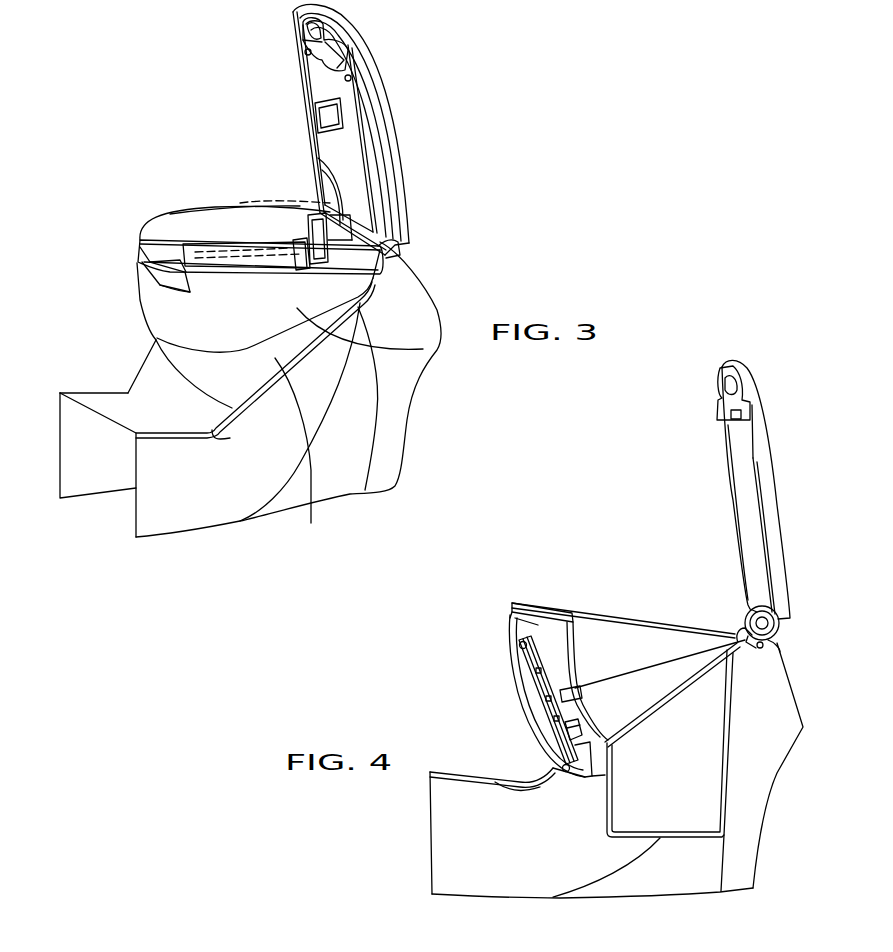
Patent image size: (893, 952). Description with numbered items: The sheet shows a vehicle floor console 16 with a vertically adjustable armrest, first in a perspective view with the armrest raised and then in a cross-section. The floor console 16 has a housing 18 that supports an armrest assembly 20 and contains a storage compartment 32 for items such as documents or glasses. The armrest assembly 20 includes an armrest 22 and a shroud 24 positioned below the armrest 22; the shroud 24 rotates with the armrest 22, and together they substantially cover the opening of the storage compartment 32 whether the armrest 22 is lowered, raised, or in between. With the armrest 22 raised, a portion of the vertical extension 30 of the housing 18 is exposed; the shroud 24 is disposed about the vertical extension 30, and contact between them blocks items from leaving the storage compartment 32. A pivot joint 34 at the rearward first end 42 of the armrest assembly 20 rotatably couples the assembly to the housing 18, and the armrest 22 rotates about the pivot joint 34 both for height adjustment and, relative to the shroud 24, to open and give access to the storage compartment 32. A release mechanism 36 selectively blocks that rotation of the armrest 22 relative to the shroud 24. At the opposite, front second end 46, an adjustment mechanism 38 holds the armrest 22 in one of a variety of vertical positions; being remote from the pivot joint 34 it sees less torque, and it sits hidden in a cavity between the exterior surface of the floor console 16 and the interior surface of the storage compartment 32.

In FIG. 3, the floor console 16 is at (443, 283).
In FIG. 4, the floor console 16 is at (801, 691).
In FIG. 3, the housing 18 is at (387, 437).
In FIG. 4, the housing 18 is at (750, 837).
In FIG. 3, the armrest assembly 20 is at (426, 203).
In FIG. 4, the armrest assembly 20 is at (793, 597).
In FIG. 3, the armrest 22 is at (393, 96).
In FIG. 4, the armrest 22 is at (768, 433).
In FIG. 3, the shroud 24 is at (423, 349).
In FIG. 4, the shroud 24 is at (631, 618).
In FIG. 3, the vertical extension 30 is at (311, 490).
In FIG. 4, the vertical extension 30 is at (535, 737).
In FIG. 3, the storage compartment 32 is at (316, 250).
In FIG. 4, the storage compartment 32 is at (673, 722).
In FIG. 3, the pivot joint 34 is at (325, 215).
In FIG. 4, the pivot joint 34 is at (748, 616).
In FIG. 3, the release mechanism 36 is at (325, 66).
In FIG. 4, the release mechanism 36 is at (722, 388).
In FIG. 4, the adjustment mechanism 38 is at (557, 645).
In FIG. 4, the first end 42 is at (788, 637).
In FIG. 4, the second end 46 is at (518, 601).